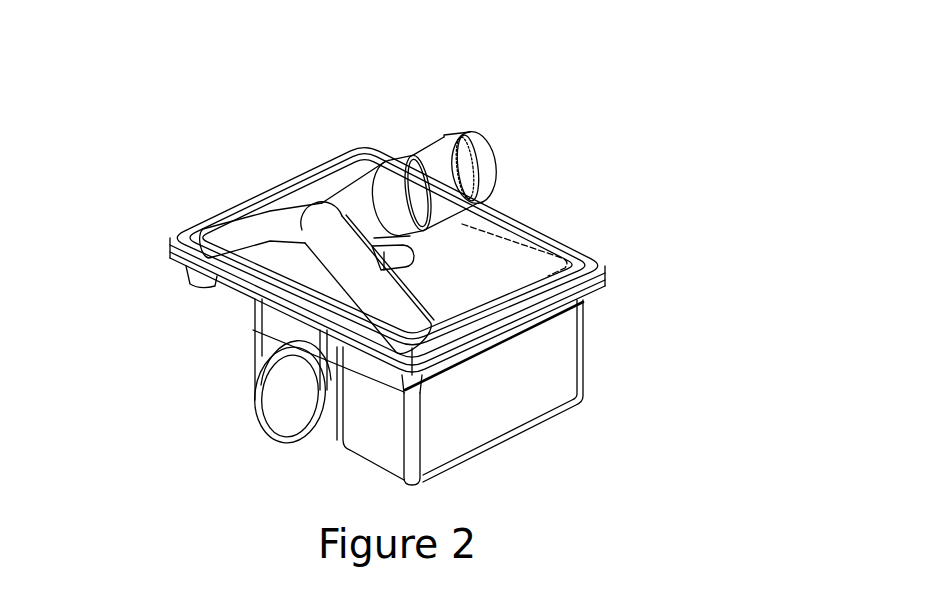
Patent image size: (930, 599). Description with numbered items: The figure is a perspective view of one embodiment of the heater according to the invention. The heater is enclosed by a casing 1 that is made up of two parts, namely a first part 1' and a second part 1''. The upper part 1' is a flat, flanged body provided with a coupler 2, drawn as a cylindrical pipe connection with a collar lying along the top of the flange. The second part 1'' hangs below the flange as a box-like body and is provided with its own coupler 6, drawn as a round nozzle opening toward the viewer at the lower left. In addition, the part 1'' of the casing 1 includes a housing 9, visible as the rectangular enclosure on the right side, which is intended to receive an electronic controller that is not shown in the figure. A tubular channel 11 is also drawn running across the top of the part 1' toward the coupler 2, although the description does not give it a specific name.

The casing 1 is at (309, 463).
The first casing part 1' is at (355, 239).
The second casing part 1'' is at (601, 363).
The coupler 2 is at (428, 130).
The coupler 6 is at (249, 418).
The housing 9 is at (525, 417).
The channel tube 11 is at (260, 266).